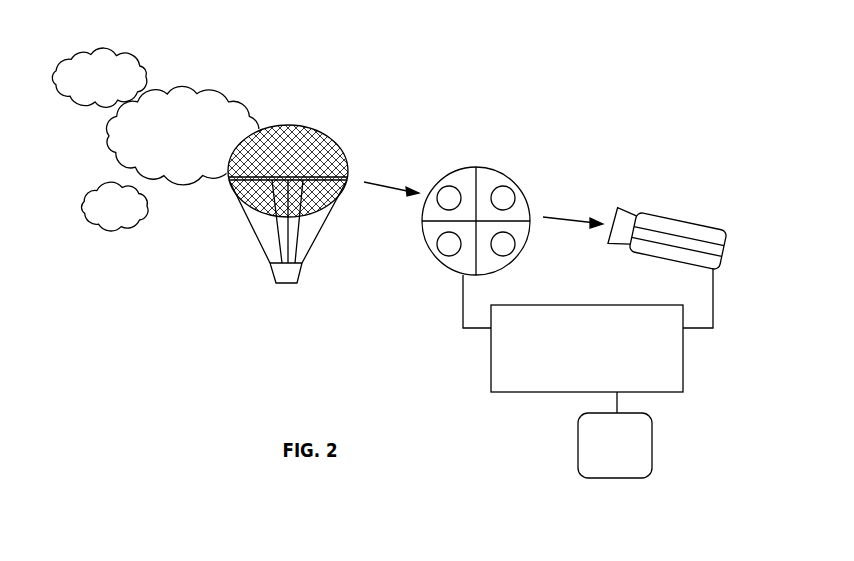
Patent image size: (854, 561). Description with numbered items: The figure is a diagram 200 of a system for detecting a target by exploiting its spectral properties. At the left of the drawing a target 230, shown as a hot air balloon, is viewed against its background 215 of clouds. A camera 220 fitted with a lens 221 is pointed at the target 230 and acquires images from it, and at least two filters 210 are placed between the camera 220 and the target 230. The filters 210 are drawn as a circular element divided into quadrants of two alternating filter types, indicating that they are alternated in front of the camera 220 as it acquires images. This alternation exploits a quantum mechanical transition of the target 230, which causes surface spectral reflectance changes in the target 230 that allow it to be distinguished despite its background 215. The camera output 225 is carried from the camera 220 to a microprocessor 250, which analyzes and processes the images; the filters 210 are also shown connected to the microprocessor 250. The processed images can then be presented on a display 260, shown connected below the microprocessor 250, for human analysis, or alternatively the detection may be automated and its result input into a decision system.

The diagram of a system 200 is at (556, 68).
The background 215 is at (144, 62).
The target 230 is at (315, 139).
The filters 210 is at (492, 177).
The camera 220 is at (675, 222).
The lens 221 is at (623, 218).
The camera output 225 is at (713, 310).
The microprocessor 250 is at (491, 378).
The display 260 is at (579, 450).